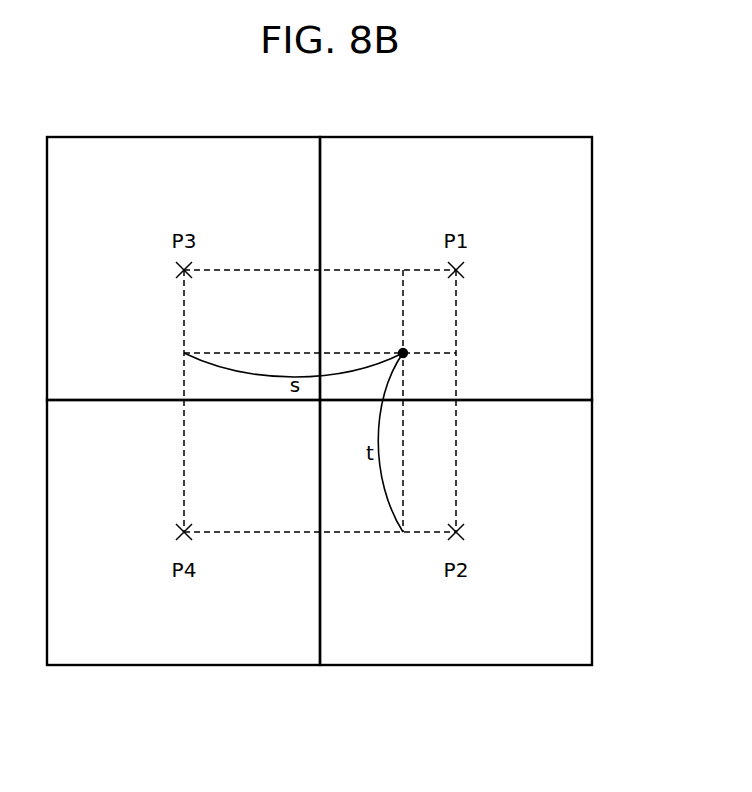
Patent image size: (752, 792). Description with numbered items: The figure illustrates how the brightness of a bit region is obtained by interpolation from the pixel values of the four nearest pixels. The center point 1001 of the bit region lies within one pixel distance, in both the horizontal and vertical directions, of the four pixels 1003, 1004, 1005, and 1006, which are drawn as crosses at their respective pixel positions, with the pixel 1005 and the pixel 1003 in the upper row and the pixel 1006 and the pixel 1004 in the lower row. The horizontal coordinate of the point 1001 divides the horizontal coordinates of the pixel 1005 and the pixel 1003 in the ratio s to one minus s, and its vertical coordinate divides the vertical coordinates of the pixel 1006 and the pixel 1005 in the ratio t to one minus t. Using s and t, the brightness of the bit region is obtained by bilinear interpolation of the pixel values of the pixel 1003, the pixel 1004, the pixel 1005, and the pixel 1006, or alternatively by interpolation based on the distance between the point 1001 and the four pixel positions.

The center point of the bit region 1001 is at (403, 353).
The pixel 1003 is at (472, 155).
The pixel 1004 is at (475, 628).
The pixel 1005 is at (157, 155).
The pixel 1006 is at (160, 628).